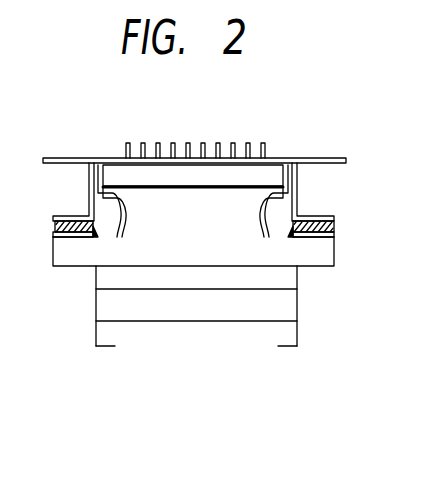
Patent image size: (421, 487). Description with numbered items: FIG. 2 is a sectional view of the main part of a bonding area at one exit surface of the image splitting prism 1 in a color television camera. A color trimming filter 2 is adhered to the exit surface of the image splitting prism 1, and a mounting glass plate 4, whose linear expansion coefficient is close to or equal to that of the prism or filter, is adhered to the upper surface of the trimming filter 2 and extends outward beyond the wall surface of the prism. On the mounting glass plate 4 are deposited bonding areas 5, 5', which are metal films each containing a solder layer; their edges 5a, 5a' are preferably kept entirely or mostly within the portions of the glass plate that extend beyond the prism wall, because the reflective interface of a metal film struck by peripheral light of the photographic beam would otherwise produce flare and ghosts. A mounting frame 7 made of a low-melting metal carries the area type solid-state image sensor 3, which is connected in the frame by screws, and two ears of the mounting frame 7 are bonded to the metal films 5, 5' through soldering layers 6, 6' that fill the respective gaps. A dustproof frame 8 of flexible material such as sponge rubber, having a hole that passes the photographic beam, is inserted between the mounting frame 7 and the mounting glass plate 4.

The image splitting prism 1 is at (178, 333).
The color trimming filter 2 is at (121, 313).
The solid-state image sensor 3 is at (268, 170).
The mounting glass plate 4 is at (128, 255).
The bonding area 5 is at (50, 230).
The bonding area 5' is at (340, 221).
The edge of bonding area 5a is at (69, 270).
The edge of bonding area 5a' is at (341, 250).
The soldering layer 6 is at (57, 205).
The soldering layer 6' is at (329, 202).
The mounting frame 7 is at (102, 159).
The dustproof frame 8 is at (273, 222).